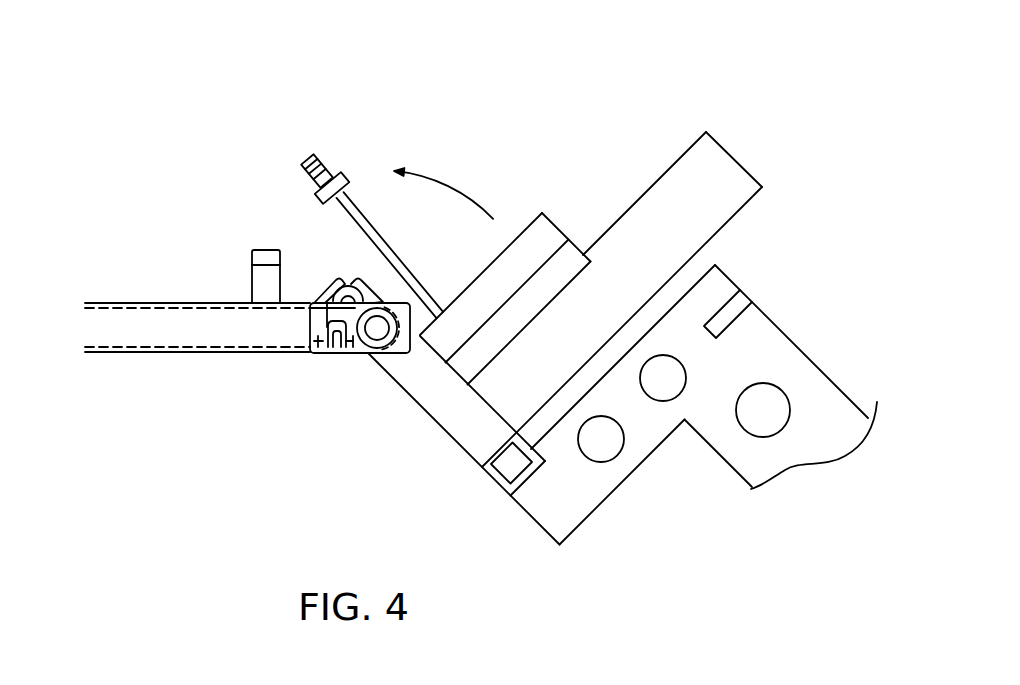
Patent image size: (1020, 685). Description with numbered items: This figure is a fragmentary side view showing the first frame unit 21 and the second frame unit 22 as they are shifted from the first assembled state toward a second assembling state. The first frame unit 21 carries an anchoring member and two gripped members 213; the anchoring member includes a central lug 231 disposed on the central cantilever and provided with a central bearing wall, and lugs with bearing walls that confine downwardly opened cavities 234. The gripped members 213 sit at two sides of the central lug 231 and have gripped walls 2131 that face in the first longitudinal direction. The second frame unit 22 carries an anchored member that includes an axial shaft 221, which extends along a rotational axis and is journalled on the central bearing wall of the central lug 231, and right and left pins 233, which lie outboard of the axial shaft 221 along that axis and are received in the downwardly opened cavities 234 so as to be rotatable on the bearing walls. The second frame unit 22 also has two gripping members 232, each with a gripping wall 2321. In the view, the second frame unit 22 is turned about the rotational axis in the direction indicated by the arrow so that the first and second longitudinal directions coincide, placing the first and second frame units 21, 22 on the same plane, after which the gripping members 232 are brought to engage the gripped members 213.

The first frame unit 21 is at (153, 357).
The second frame unit 22 is at (658, 147).
The axial shaft 221 is at (381, 354).
The gripped member 213 is at (330, 344).
The gripped wall 2131 is at (300, 341).
The central lug 231 is at (387, 305).
The gripping member 232 is at (318, 292).
The gripping wall 2321 is at (318, 311).
The pin 233 is at (369, 342).
The downwardly opened cavity 234 is at (372, 322).